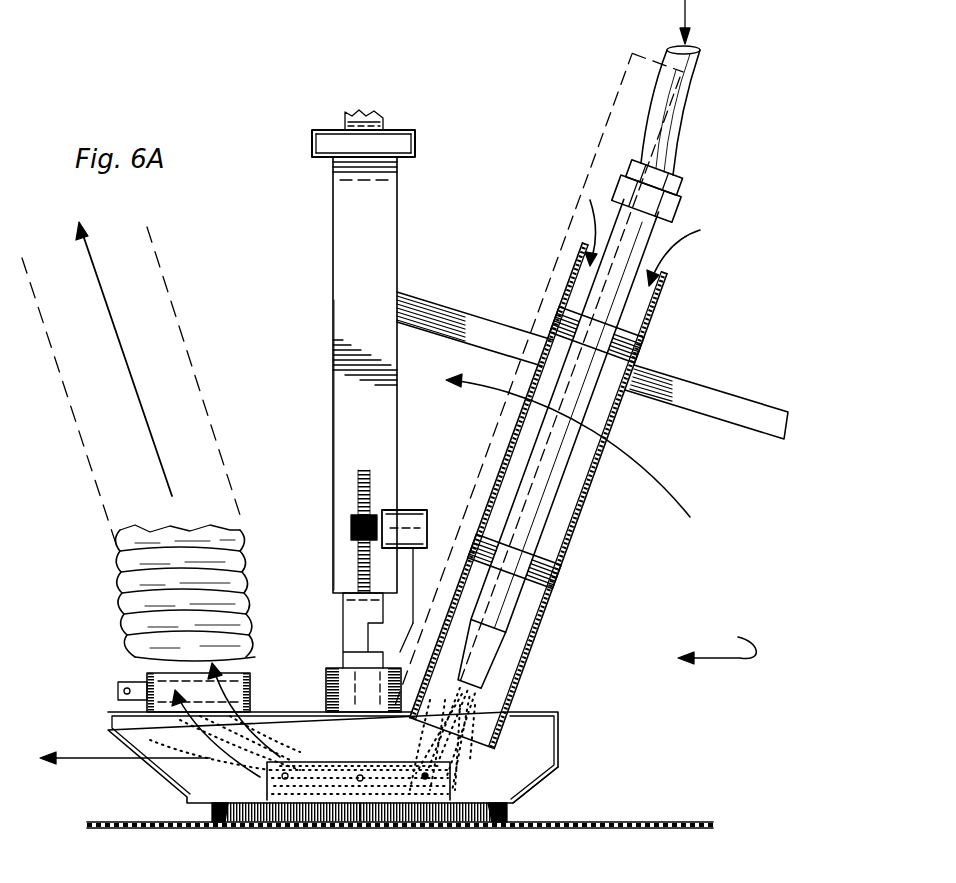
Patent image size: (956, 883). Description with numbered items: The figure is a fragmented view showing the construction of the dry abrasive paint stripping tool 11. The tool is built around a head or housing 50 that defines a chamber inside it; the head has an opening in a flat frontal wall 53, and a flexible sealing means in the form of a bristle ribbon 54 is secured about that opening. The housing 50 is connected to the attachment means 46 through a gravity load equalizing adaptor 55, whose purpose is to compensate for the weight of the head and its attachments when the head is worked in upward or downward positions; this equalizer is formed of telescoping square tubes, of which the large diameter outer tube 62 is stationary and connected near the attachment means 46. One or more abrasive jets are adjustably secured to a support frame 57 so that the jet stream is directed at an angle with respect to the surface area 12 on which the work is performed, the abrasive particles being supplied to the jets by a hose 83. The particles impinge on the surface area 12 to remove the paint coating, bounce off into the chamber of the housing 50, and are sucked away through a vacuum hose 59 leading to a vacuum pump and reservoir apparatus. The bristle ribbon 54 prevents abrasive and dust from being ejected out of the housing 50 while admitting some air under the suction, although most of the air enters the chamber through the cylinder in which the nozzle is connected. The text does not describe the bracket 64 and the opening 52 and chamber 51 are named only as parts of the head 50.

The dry abrasive paint stripping tool 11 is at (717, 640).
The surface area 12 is at (643, 823).
The attachment means 46 is at (384, 115).
The head or housing 50 is at (558, 708).
The chamber 51 is at (510, 784).
The opening 52 is at (280, 794).
The flat frontal wall 53 is at (513, 810).
The bristle ribbon 54 is at (453, 827).
The gravity load equalizing adaptor 55 is at (352, 313).
The support frame 57 is at (700, 397).
The vacuum hose 59 is at (142, 624).
The outer tube 62 is at (376, 438).
The bracket 64 is at (343, 619).
The hose 83 is at (679, 120).